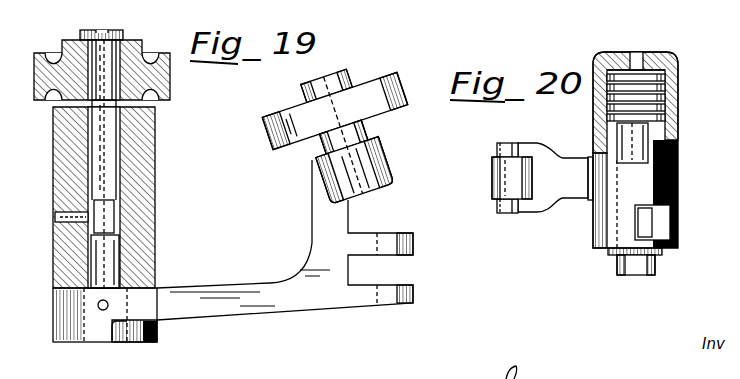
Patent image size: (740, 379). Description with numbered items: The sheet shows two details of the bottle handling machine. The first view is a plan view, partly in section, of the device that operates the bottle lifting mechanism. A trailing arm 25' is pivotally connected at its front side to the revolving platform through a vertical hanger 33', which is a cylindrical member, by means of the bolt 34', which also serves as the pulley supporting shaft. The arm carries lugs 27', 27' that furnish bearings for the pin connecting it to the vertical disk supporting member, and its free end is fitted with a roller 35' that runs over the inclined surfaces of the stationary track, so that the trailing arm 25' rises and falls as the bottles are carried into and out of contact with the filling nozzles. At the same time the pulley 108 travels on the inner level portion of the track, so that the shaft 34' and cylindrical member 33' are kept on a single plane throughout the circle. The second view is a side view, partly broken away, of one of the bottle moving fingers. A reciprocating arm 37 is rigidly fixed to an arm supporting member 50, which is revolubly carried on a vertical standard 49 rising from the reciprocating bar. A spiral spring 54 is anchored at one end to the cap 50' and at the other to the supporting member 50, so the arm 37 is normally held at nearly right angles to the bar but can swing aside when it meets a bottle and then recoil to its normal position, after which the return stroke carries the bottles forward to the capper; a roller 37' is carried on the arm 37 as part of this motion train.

In FIG. 19, the pulley 108 is at (170, 80).
In FIG. 19, the vertical hanger 33' is at (125, 197).
In FIG. 19, the bolt 34' is at (145, 164).
In FIG. 19, the trailing arm 25' is at (233, 258).
In FIG. 19, the lugs 27' is at (416, 294).
In FIG. 19, the roller 35' is at (324, 135).
In FIG. 20, the cap 50' is at (646, 139).
In FIG. 20, the arm supporting member 50 is at (614, 207).
In FIG. 20, the spiral spring 54 is at (662, 105).
In FIG. 20, the vertical standard 49 is at (597, 138).
In FIG. 20, the reciprocating arm 37 is at (555, 196).
In FIG. 20, the roller 37' is at (488, 178).